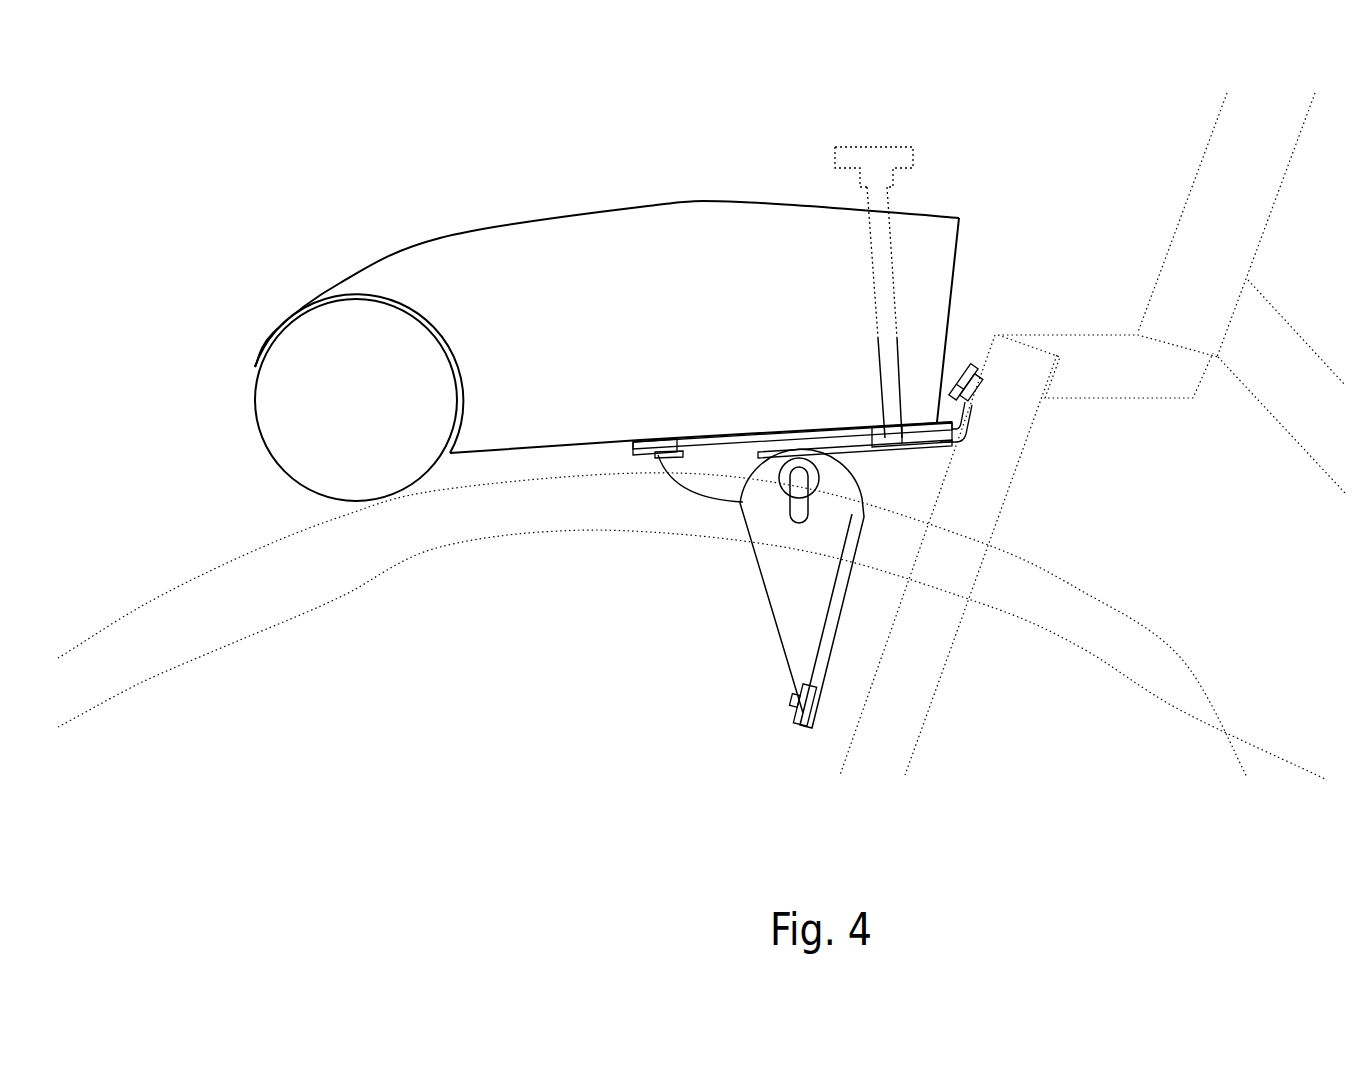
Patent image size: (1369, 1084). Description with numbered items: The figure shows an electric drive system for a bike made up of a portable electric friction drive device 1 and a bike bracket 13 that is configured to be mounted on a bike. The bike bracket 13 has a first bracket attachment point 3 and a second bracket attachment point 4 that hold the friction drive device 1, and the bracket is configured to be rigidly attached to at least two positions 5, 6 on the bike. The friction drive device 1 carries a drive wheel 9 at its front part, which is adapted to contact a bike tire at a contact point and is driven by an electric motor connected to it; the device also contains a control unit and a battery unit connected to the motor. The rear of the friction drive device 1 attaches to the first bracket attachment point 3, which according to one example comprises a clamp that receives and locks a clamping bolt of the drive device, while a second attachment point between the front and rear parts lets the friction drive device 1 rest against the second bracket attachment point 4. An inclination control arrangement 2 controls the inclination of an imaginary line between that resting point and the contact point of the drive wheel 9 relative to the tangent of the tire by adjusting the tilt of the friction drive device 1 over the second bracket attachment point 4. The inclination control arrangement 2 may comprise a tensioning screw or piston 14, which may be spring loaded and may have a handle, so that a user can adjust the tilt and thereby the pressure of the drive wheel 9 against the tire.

The portable electric friction drive device 1 is at (535, 197).
The inclination control arrangement 2 is at (903, 360).
The first bracket attachment point 3 is at (900, 450).
The second bracket attachment point 4 is at (653, 457).
The first position on a bike 5 is at (820, 702).
The second position on a bike 6 is at (983, 407).
The drive wheel 9 is at (365, 417).
The bike bracket 13 is at (863, 440).
The tensioning screw or piston 14 is at (872, 156).